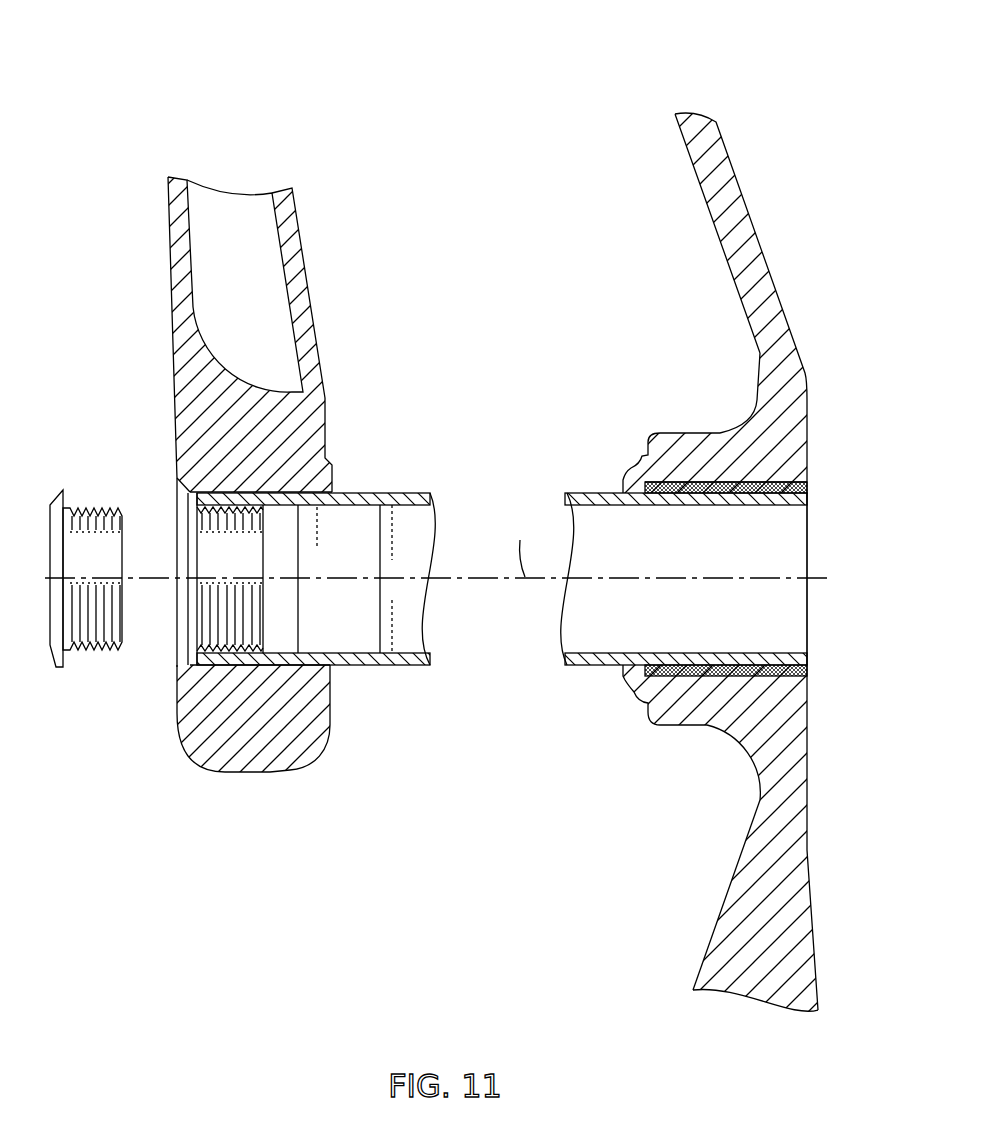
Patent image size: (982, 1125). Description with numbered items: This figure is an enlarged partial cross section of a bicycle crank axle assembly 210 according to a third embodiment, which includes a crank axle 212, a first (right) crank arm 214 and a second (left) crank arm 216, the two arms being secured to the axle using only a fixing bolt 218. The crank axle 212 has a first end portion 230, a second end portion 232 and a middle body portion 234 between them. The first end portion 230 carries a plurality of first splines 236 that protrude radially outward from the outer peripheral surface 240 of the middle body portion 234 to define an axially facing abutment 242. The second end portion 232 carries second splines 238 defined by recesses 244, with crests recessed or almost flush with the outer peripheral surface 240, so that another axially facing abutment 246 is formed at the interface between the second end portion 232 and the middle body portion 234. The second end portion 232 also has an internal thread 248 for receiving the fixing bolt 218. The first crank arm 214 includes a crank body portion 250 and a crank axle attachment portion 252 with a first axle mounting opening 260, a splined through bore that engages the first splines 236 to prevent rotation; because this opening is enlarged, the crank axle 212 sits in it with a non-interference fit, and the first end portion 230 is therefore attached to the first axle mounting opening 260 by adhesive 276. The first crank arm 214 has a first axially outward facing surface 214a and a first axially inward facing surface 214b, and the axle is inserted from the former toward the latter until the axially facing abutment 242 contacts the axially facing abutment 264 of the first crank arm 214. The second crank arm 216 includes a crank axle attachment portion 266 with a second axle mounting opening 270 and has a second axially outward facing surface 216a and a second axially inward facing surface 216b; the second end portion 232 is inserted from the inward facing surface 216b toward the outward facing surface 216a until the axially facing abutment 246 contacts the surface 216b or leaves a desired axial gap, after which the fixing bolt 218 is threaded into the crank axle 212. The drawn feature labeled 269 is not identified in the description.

The bicycle crank axle assembly 210 is at (566, 72).
The crank axle 212 is at (432, 474).
The first crank arm 214 is at (818, 866).
The first axially outward facing surface 214a is at (818, 970).
The first axially inward facing surface 214b is at (715, 933).
The second crank arm 216 is at (168, 286).
The second axially outward facing surface 216a is at (172, 340).
The second axially inward facing surface 216b is at (320, 344).
The fixing bolt 218 is at (50, 505).
The first end portion 230 is at (766, 476).
The second end portion 232 is at (240, 488).
The middle body portion 234 is at (402, 668).
The first splines 236 is at (703, 482).
The second splines 238 is at (252, 666).
The outer peripheral surface 240 is at (590, 666).
The axially facing abutment 242 is at (637, 488).
The recesses 244 is at (300, 684).
The axially facing abutment 246 is at (322, 466).
The internal thread 248 is at (218, 518).
The crank body portion 250 is at (738, 862).
The crank axle attachment portion 252 is at (808, 410).
The first axle mounting opening 260 is at (733, 496).
The axially facing abutment 264 is at (632, 653).
The crank axle attachment portion 266 is at (205, 743).
The annular groove 269 is at (297, 283).
The second axle mounting opening 270 is at (223, 648).
The adhesive 276 is at (703, 677).